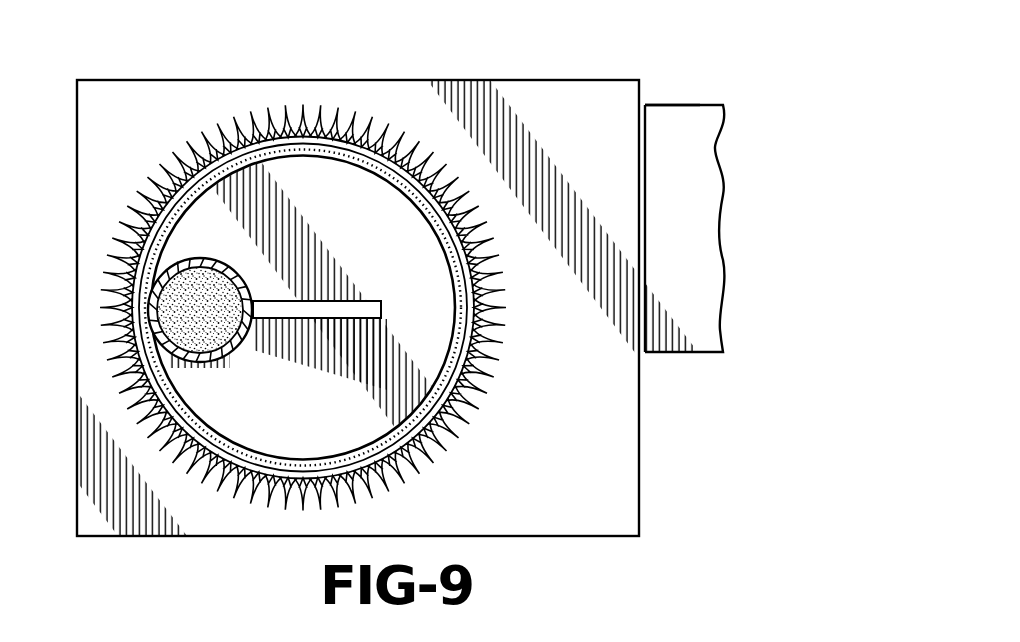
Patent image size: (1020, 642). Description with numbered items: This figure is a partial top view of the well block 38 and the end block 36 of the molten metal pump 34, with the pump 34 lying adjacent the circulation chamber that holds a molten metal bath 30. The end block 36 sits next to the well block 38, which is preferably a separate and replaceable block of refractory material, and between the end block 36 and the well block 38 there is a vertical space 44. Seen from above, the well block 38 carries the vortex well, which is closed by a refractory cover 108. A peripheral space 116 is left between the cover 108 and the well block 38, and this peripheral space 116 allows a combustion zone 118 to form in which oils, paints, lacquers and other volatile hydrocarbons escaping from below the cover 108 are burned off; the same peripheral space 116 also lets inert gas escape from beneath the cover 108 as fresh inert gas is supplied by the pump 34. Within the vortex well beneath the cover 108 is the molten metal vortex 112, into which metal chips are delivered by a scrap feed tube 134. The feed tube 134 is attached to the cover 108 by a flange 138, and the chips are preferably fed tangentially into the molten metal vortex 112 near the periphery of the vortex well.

The molten metal pump 34 is at (538, 66).
The well block 38 is at (605, 86).
The vertical space 44 is at (645, 104).
The end block 36 is at (718, 146).
The refractory cover 108 is at (342, 264).
The combustion zone 118 is at (492, 322).
The peripheral space 116 is at (338, 145).
The flange 138 is at (360, 305).
The molten metal bath 30 is at (243, 315).
The scrap feed tube 134 is at (237, 340).
The molten metal vortex 112 is at (210, 330).